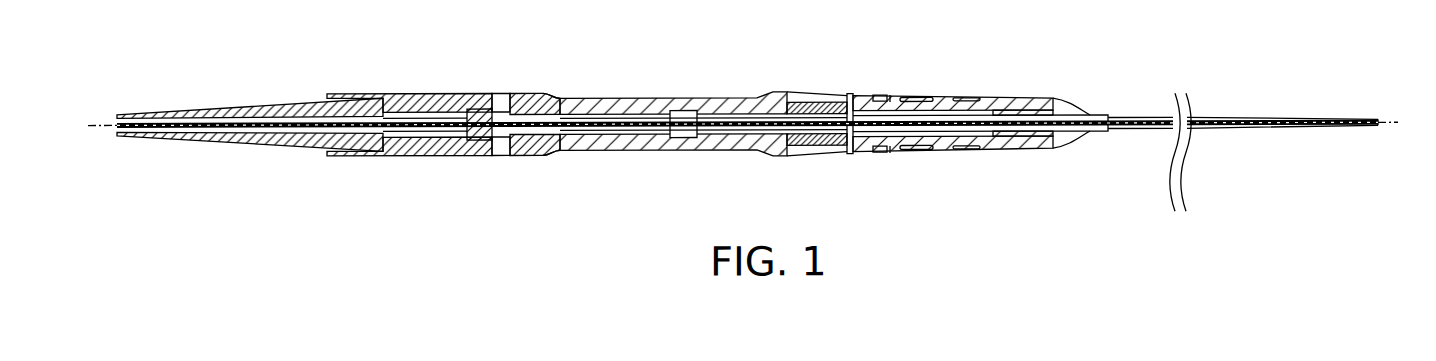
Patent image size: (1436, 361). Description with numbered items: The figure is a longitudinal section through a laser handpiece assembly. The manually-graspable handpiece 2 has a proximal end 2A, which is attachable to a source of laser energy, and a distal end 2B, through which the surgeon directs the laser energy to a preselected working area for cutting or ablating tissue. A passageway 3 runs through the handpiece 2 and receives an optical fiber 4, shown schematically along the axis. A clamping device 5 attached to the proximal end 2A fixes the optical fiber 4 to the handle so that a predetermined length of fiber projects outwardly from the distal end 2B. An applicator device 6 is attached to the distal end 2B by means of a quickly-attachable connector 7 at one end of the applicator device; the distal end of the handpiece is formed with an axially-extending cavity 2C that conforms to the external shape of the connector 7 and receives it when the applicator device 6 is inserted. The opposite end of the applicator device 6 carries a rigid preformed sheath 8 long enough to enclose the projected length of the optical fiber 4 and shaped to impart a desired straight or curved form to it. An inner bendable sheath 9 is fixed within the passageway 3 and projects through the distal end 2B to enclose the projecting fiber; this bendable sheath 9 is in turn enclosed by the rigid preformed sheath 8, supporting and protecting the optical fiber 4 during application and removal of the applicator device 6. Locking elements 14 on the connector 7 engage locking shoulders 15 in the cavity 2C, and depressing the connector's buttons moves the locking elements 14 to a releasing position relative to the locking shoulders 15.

The handpiece 2 is at (594, 93).
The proximal end of handpiece 2A is at (540, 95).
The distal end of handpiece 2B is at (861, 98).
The axially-extending cavity 2C is at (690, 134).
The passageway 3 is at (592, 143).
The optical fiber 4 is at (103, 126).
The clamping device 5 is at (406, 95).
The applicator device 6 is at (922, 94).
The quickly-attachable connector 7 is at (920, 148).
The rigid preformed sheath 8 is at (1133, 136).
The inner bendable sheath 9 is at (1267, 131).
The locking elements 14 is at (870, 150).
The locking shoulders 15 is at (889, 150).